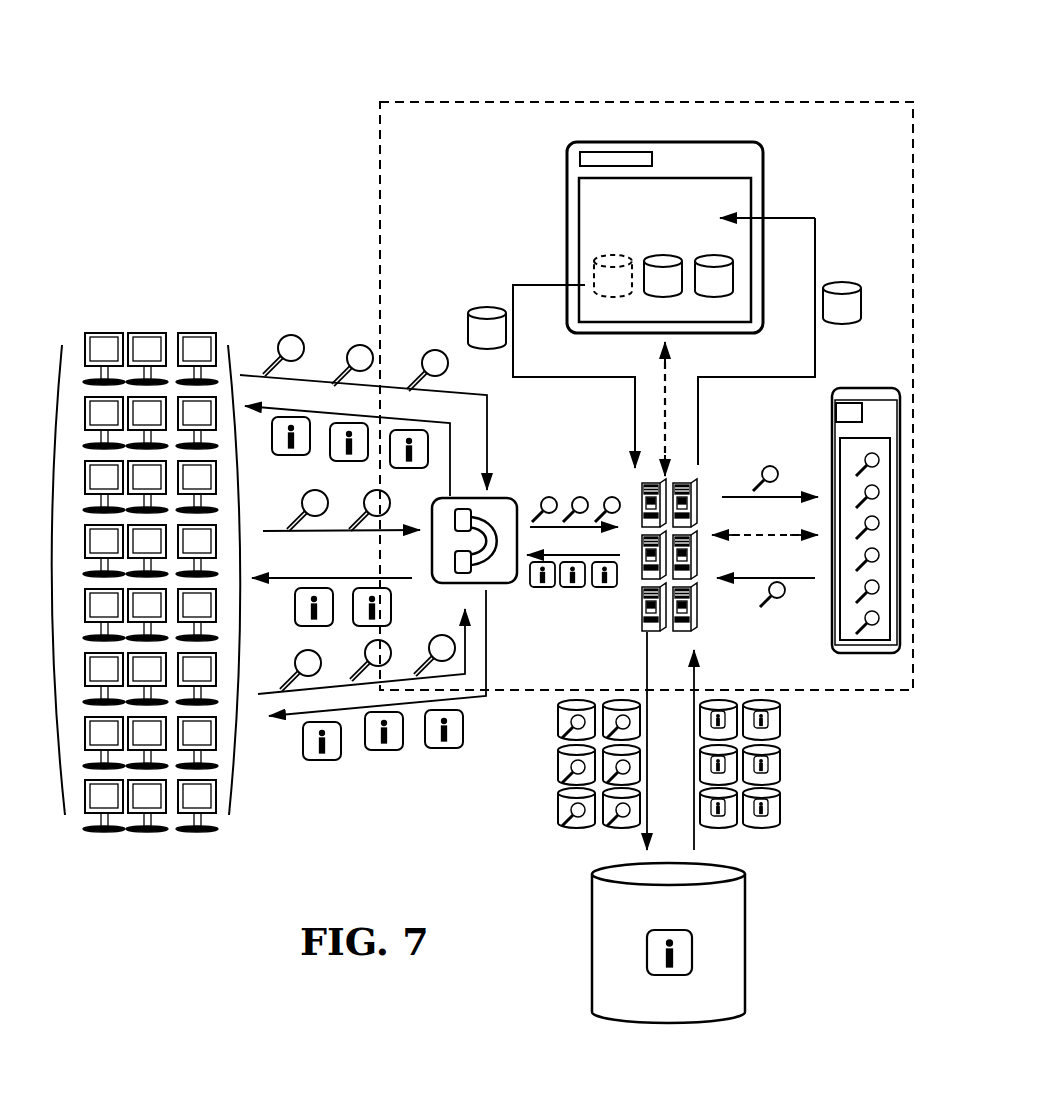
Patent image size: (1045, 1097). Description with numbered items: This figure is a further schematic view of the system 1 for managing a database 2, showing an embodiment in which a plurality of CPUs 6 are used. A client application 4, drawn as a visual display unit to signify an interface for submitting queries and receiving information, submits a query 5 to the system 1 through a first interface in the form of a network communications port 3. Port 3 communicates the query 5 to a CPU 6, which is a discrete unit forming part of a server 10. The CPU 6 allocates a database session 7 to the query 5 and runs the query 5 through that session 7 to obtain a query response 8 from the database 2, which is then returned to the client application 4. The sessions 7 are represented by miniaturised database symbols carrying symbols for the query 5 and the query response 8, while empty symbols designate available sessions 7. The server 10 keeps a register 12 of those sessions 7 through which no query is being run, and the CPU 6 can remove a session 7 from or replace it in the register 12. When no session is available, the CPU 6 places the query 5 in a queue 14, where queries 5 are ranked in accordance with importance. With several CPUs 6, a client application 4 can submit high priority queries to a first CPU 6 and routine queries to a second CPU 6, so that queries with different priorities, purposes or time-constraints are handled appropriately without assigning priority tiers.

The system 1 is at (810, 72).
The database 2 is at (745, 928).
The network communications port 3 is at (465, 583).
The client application 4 is at (195, 345).
The query 5 is at (291, 338).
The CPU 6 is at (690, 610).
The database session 7 is at (706, 255).
The query response 8 is at (330, 755).
The server 10 is at (452, 125).
The register 12 is at (615, 150).
The queue 14 is at (862, 390).